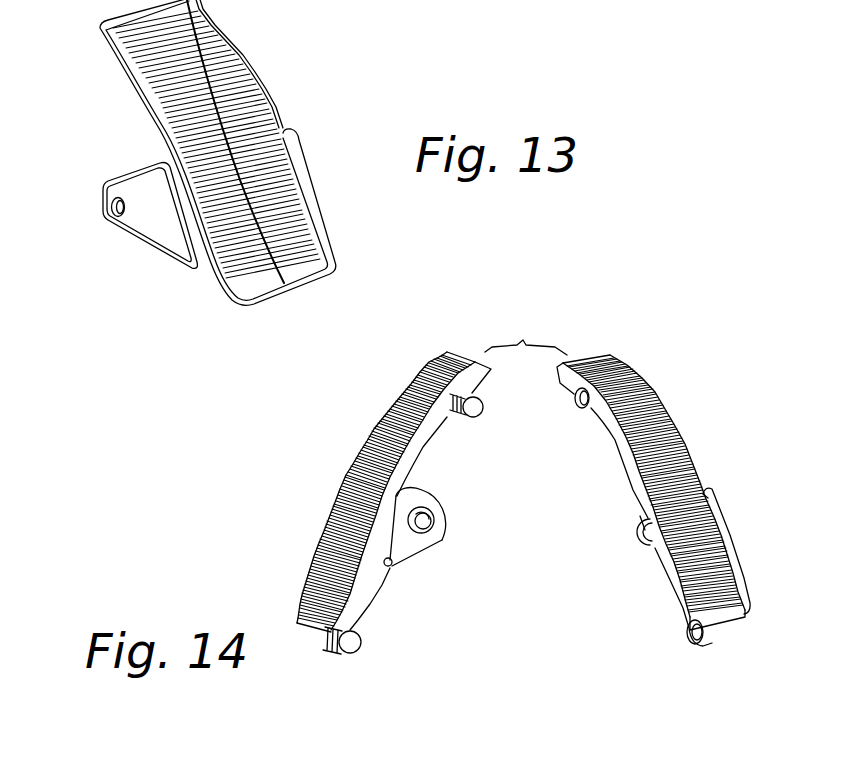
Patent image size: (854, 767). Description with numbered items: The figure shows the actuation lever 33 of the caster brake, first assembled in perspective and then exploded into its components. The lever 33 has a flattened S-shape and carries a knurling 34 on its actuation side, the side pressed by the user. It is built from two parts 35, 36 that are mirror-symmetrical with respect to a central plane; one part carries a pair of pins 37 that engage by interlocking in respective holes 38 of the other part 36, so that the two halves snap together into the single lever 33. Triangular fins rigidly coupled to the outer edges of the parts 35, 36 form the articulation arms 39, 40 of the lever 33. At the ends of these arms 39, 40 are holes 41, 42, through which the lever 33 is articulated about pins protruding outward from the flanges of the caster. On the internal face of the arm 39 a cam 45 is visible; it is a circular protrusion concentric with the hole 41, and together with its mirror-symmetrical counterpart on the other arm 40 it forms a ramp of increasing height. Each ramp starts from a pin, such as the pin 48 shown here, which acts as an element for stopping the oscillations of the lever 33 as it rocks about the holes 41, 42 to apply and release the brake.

In FIG. 13, the lever 33 is at (213, 166).
In FIG. 13, the knurling 34 is at (178, 80).
In FIG. 14, the part 35 is at (398, 403).
In FIG. 14, the part 36 is at (620, 378).
In FIG. 14, the pins 37 is at (470, 416).
In FIG. 14, the holes 38 is at (575, 409).
In FIG. 13, the articulation arm 39 is at (123, 248).
In FIG. 14, the articulation arm 39 is at (407, 547).
In FIG. 14, the articulation arm 40 is at (637, 549).
In FIG. 13, the hole 41 is at (112, 208).
In FIG. 14, the hole 41 is at (433, 527).
In FIG. 14, the hole 42 is at (640, 523).
In FIG. 14, the cam 45 is at (410, 489).
In FIG. 14, the pin 48 is at (388, 567).